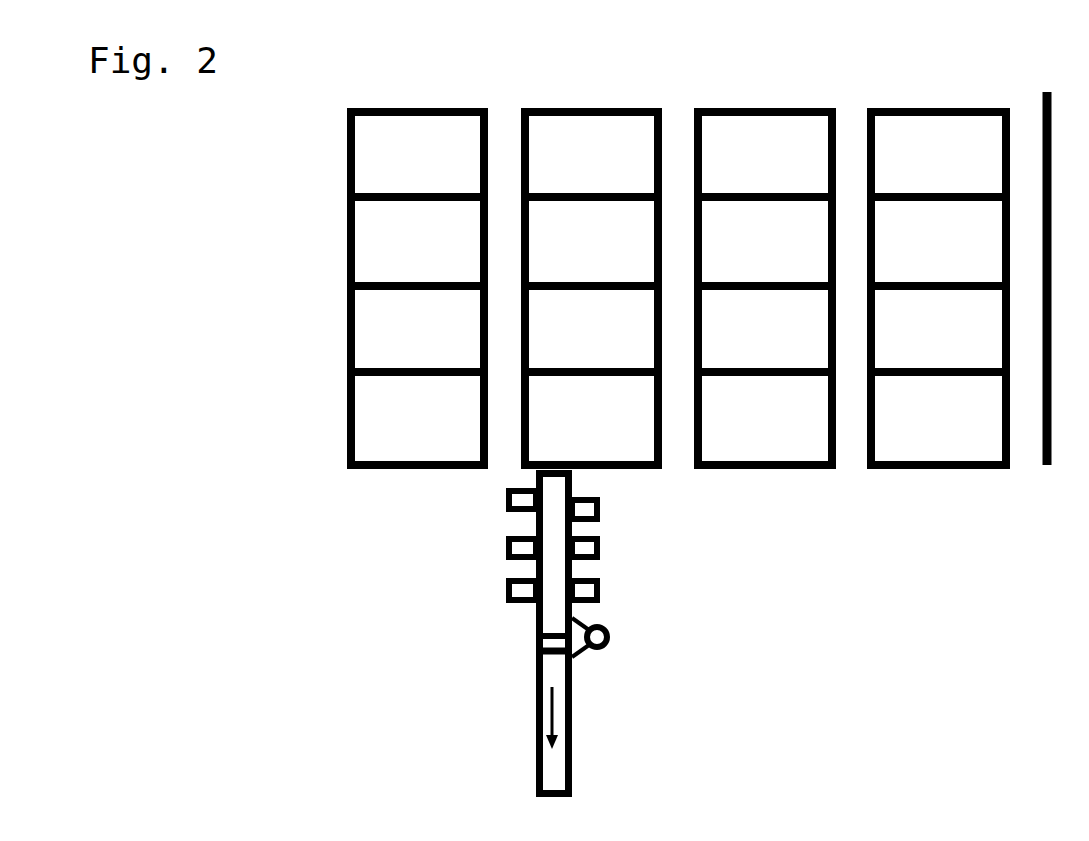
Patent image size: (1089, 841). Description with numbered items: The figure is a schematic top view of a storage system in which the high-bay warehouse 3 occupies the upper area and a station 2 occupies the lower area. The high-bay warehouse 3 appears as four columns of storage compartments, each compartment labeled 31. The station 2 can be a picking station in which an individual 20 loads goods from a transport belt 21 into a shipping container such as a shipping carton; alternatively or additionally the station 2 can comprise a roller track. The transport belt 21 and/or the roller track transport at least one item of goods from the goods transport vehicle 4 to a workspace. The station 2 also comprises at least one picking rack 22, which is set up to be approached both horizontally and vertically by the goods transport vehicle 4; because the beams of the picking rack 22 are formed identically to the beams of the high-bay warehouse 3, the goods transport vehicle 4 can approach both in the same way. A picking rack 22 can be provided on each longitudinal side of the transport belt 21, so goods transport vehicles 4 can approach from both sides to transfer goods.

The station 2 is at (416, 600).
The high-bay warehouse 3 is at (284, 205).
The container / cell 31 is at (699, 278).
The goods transport vehicle 4 is at (602, 504).
The individual 20 is at (610, 631).
The transport belt 21 is at (572, 692).
The picking rack 22 is at (672, 555).